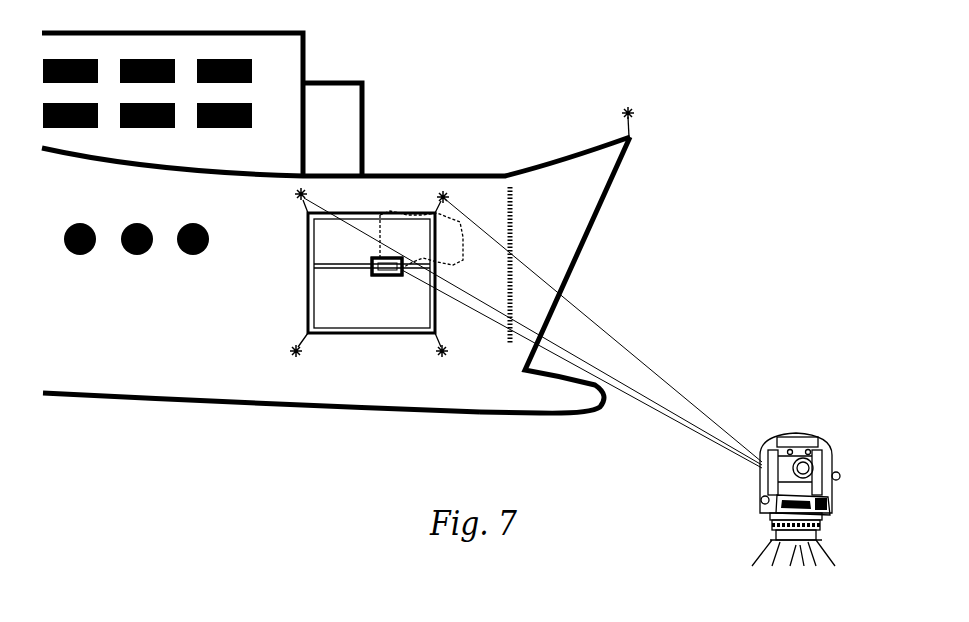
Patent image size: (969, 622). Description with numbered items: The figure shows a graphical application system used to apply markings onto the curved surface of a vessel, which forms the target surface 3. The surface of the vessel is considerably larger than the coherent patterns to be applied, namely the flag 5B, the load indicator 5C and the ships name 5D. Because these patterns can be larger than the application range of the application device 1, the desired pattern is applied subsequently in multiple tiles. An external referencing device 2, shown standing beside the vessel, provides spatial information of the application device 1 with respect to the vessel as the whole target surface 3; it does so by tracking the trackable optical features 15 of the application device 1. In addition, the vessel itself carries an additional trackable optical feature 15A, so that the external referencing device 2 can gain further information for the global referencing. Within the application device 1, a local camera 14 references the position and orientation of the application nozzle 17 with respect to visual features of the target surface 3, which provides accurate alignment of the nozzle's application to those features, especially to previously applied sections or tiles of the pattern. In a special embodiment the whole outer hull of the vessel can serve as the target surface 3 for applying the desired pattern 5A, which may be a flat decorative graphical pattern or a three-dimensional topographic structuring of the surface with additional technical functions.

The application device 1 is at (312, 333).
The external referencing device 2 is at (787, 440).
The target surface 3 is at (568, 295).
The desired pattern 5A is at (237, 370).
The flag 5B is at (445, 223).
The load indicator 5C is at (513, 282).
The ships name 5D is at (284, 196).
The local camera 14 is at (407, 452).
The trackable optical features 15 is at (444, 196).
The additional trackable optical features 15A is at (633, 112).
The application nozzle 17 is at (382, 275).